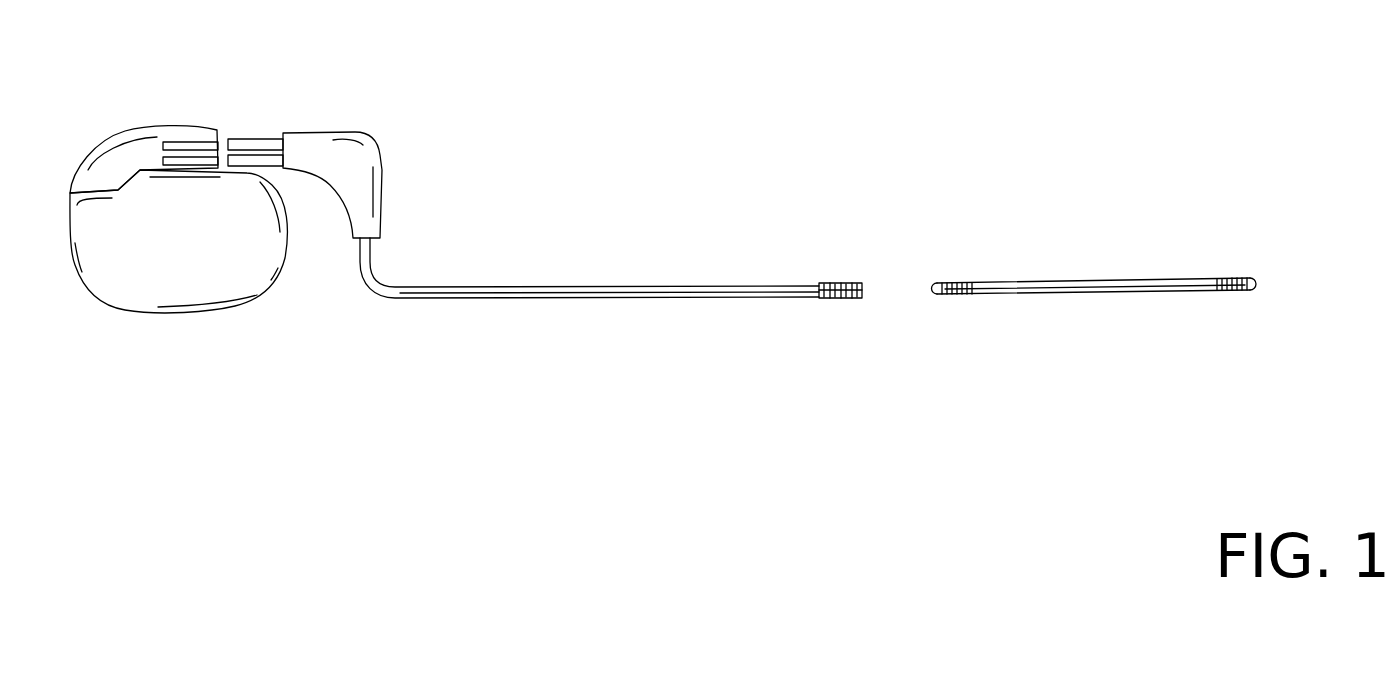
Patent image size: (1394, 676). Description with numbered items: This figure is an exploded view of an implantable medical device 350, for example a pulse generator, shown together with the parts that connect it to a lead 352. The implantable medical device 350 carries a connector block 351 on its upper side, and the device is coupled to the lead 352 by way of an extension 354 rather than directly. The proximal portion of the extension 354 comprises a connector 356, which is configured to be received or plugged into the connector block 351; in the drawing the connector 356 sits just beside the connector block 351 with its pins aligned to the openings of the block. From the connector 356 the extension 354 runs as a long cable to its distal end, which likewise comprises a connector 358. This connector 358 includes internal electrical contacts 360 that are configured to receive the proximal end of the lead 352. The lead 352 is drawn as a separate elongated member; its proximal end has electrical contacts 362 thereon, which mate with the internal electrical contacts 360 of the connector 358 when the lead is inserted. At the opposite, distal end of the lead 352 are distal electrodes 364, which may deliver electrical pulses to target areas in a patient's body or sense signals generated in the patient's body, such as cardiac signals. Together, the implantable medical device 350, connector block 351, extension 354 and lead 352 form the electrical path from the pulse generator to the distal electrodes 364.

The implantable medical device 350 is at (227, 313).
The connector block 351 is at (138, 130).
The lead 352 is at (1138, 278).
The extension 354 is at (520, 287).
The connector 356 is at (343, 130).
The connector 358 is at (833, 283).
The internal electrical contacts 360 is at (853, 280).
The electrical contacts 362 is at (947, 282).
The distal electrodes 364 is at (1225, 277).